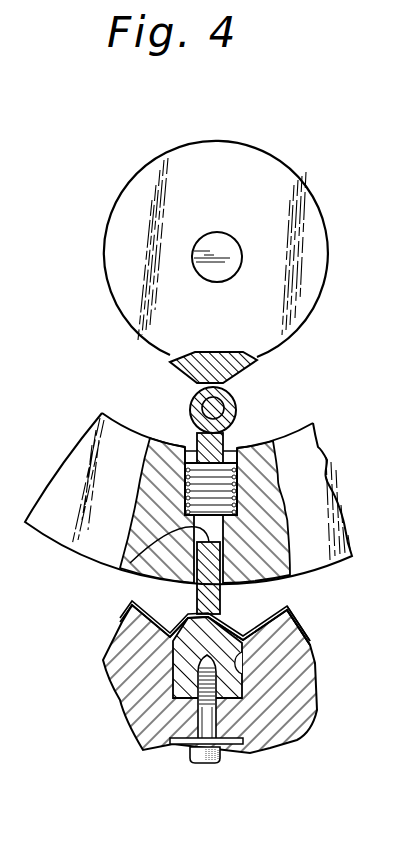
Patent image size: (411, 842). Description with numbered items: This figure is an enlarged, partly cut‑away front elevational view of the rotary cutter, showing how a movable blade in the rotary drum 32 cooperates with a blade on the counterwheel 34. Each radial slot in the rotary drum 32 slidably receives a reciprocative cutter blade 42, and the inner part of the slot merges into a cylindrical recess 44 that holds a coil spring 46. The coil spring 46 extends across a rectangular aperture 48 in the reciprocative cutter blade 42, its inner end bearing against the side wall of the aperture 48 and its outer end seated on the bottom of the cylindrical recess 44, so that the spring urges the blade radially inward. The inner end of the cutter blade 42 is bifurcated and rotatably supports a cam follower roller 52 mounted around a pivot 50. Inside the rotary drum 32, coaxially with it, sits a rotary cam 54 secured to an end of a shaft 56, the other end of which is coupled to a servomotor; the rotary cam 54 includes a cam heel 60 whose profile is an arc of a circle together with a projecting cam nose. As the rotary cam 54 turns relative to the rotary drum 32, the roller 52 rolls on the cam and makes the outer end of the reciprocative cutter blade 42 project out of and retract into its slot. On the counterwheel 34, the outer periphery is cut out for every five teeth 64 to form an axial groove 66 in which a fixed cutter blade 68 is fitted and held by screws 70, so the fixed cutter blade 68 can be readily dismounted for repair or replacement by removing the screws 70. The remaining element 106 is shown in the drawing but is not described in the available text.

The rotary drum 32 is at (340, 560).
The counterwheel 34 is at (296, 722).
The reciprocative cutter blade 42 is at (193, 590).
The cylindrical recess 44 is at (193, 446).
The coil spring 46 is at (240, 447).
The rectangular aperture 48 is at (120, 570).
The pivot 50 is at (224, 409).
The cam follower roller 52 is at (195, 402).
The rotary cam 54 is at (277, 340).
The shaft 56 is at (227, 240).
The cam heel 60 is at (322, 246).
The teeth 64 is at (122, 622).
The axial groove 66 is at (243, 673).
The fixed cutter blade 68 is at (226, 632).
The screws 70 is at (198, 763).
The spring flange end 106 is at (311, 628).